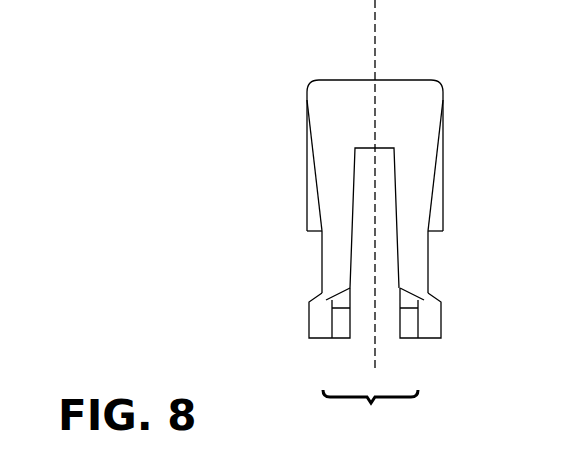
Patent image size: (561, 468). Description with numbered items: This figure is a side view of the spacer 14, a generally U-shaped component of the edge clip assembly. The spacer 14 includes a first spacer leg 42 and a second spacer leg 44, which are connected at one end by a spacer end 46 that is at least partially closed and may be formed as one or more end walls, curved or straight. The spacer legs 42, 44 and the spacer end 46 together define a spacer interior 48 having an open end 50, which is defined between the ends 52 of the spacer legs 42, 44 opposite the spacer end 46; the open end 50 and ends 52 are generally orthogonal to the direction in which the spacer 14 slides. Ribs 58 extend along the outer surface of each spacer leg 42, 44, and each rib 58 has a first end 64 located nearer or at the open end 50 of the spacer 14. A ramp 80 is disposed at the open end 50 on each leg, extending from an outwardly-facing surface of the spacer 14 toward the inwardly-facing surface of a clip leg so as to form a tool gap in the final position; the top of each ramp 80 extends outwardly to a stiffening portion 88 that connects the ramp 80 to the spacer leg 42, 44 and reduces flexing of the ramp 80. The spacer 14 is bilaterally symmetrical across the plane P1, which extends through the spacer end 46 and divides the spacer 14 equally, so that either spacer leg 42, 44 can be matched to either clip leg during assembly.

The spacer 14 is at (272, 55).
The plane P1 is at (375, 37).
The spacer end 46 is at (403, 77).
The spacer interior 48 is at (360, 176).
The rib 58 is at (307, 210).
The first end 64 is at (310, 233).
The second spacer leg 44 is at (308, 257).
The first spacer leg 42 is at (437, 267).
The end 52 is at (318, 304).
The ramp 80 is at (322, 299).
The stiffening portion 88 is at (318, 333).
The open end 50 is at (370, 413).